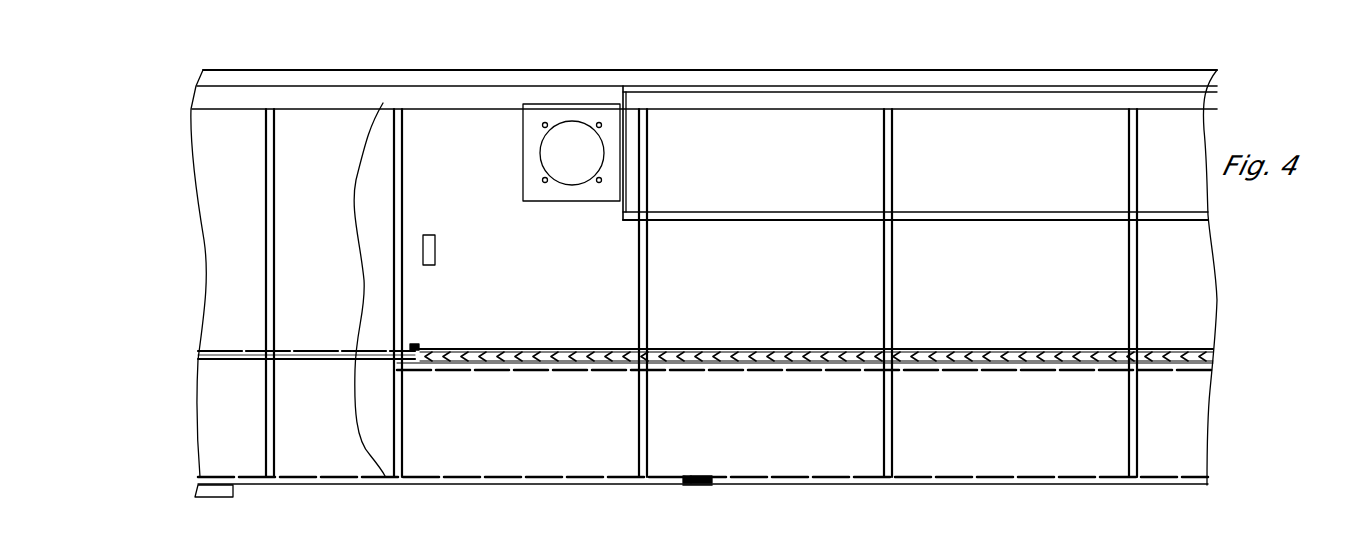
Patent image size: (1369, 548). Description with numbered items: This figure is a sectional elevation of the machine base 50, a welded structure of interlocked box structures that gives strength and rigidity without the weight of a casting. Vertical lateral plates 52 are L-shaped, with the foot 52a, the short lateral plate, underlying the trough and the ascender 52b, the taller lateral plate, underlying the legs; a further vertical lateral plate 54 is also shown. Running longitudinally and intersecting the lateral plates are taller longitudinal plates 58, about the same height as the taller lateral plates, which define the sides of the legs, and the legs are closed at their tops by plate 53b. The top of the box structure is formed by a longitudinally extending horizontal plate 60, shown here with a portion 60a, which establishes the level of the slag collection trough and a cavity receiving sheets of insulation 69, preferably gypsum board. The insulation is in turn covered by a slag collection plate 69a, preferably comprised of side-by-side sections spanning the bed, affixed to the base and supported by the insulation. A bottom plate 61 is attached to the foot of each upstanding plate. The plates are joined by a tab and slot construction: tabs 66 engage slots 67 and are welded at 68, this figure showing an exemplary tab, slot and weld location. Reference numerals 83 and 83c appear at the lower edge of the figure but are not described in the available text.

The wall panel assembly 50 is at (180, 300).
The vertical lateral plate 52 is at (930, 438).
The short lateral plate 52a is at (397, 427).
The taller lateral plate 52b is at (397, 204).
The top plate 53b is at (937, 69).
The vertical lateral plate 54 is at (893, 305).
The taller longitudinal plate 58 is at (700, 242).
The horizontal plate 60 is at (1117, 370).
The middle rail 60a is at (297, 362).
The bottom plate 61 is at (983, 483).
The tab 66 is at (683, 477).
The slot 67 is at (698, 477).
The weld 68 is at (703, 485).
The insulation 69 is at (788, 348).
The slag collection plate 69a is at (529, 348).
The support 83 is at (552, 547).
The support arm 83c is at (600, 545).